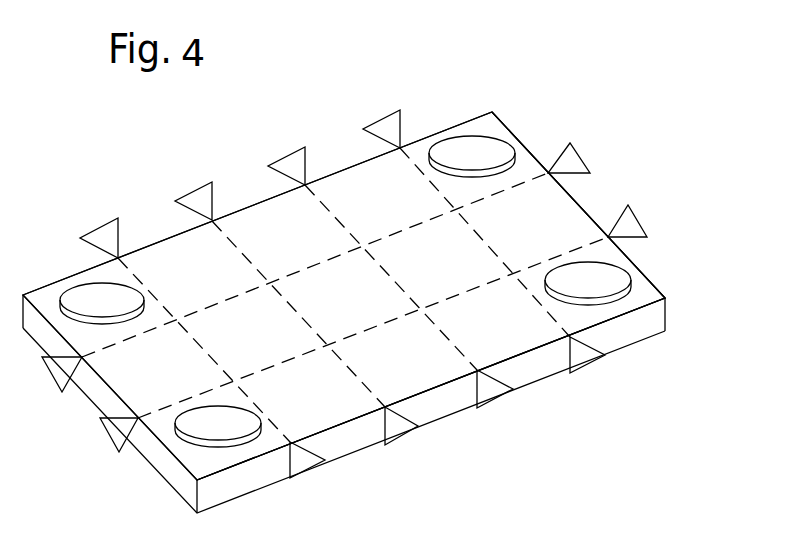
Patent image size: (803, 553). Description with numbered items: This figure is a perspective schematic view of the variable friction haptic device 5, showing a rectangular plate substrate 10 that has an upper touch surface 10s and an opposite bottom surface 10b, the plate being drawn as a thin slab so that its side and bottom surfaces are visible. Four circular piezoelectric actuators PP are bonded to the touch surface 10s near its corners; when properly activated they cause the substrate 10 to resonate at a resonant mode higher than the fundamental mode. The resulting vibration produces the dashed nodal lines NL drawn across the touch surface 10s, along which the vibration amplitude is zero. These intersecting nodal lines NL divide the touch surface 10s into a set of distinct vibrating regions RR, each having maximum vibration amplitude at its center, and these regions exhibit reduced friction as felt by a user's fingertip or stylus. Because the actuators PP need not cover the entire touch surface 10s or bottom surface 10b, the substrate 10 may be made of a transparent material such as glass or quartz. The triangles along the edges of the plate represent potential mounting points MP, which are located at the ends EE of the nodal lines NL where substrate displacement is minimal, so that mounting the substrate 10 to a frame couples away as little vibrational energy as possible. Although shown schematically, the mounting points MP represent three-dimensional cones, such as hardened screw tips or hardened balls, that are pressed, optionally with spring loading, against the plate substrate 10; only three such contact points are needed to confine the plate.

The variable friction haptic device 5 is at (619, 194).
The substrate 10 is at (173, 478).
The touch surface 10s is at (364, 198).
The bottom surface 10b is at (642, 348).
The mounting points MP is at (103, 220).
The nodal lines NL is at (312, 265).
The piezoelectric actuators PP is at (100, 300).
The distinct vibrating regions RR is at (538, 220).
The ends of the nodal lines EE is at (583, 210).